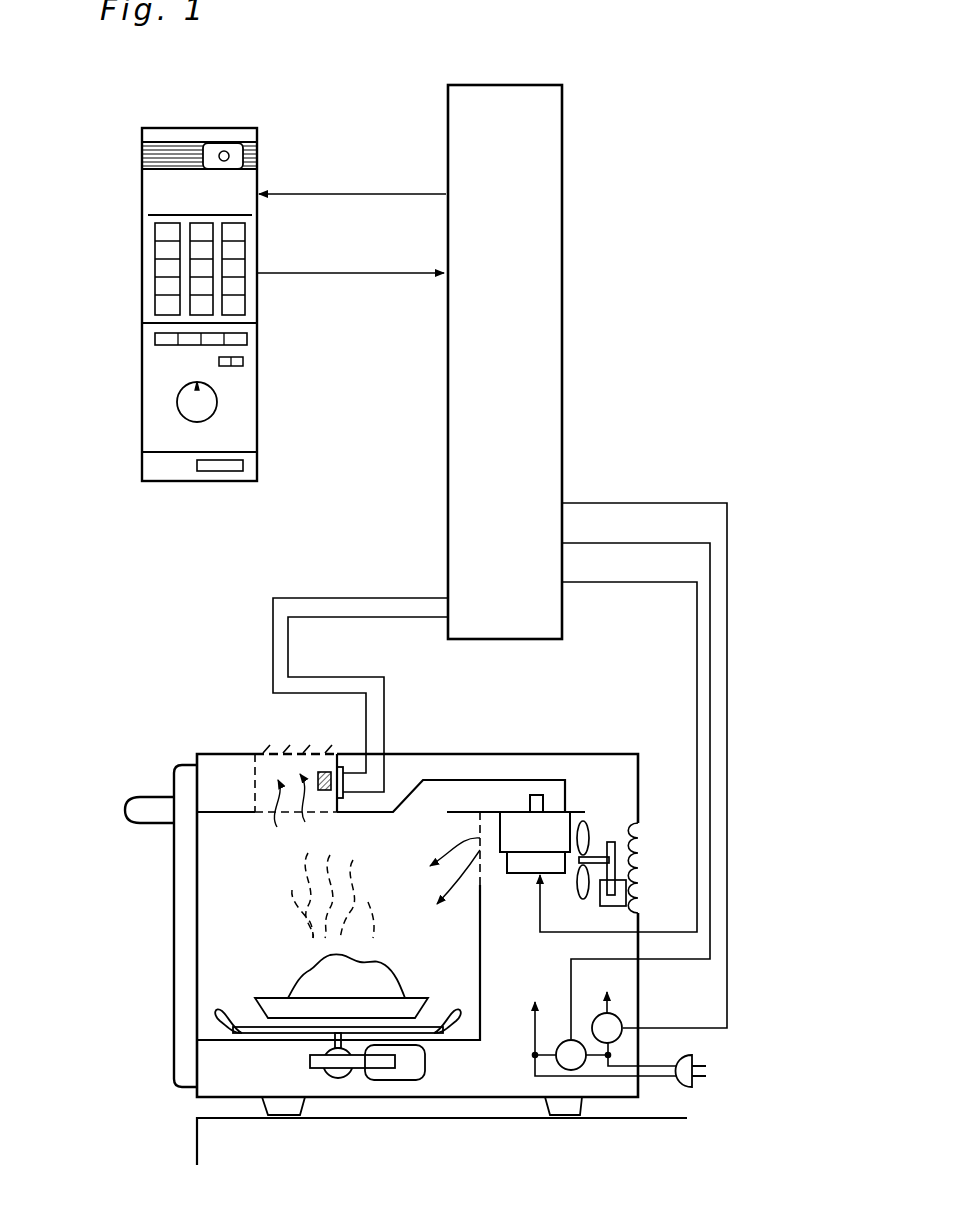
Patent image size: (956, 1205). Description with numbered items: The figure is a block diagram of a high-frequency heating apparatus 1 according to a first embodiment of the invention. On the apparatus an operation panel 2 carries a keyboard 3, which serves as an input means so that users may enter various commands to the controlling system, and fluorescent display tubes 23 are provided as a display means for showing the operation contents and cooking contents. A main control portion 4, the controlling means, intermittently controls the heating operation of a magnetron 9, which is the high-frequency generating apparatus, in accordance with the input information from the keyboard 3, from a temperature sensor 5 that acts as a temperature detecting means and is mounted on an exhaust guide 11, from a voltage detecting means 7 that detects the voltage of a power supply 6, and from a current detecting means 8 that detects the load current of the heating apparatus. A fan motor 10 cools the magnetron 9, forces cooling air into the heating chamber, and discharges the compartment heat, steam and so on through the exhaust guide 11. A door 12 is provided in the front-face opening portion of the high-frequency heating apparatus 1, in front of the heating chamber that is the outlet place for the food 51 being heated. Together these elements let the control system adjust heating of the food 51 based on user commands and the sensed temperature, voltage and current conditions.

The high-frequency heating apparatus 1 is at (488, 753).
The operation panel 2 is at (207, 127).
The keyboard 3 is at (155, 272).
The fluorescent display tubes 23 is at (173, 193).
The main control portion 4 is at (562, 180).
The temperature sensor 5 is at (322, 772).
The power supply 6 is at (706, 1068).
The voltage detecting means 7 is at (563, 1040).
The current detecting means 8 is at (620, 1015).
The magnetron 9 is at (523, 867).
The fan motor 10 is at (590, 835).
The exhaust guide 11 is at (255, 765).
The door 12 is at (175, 932).
The food 51 is at (337, 980).